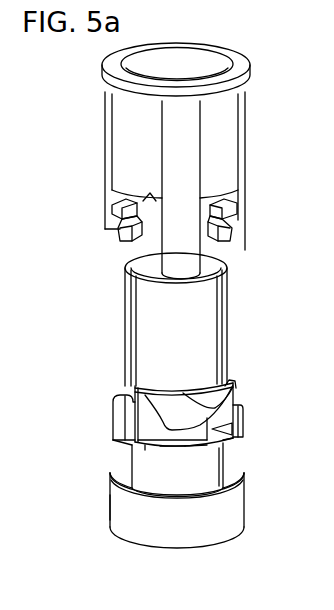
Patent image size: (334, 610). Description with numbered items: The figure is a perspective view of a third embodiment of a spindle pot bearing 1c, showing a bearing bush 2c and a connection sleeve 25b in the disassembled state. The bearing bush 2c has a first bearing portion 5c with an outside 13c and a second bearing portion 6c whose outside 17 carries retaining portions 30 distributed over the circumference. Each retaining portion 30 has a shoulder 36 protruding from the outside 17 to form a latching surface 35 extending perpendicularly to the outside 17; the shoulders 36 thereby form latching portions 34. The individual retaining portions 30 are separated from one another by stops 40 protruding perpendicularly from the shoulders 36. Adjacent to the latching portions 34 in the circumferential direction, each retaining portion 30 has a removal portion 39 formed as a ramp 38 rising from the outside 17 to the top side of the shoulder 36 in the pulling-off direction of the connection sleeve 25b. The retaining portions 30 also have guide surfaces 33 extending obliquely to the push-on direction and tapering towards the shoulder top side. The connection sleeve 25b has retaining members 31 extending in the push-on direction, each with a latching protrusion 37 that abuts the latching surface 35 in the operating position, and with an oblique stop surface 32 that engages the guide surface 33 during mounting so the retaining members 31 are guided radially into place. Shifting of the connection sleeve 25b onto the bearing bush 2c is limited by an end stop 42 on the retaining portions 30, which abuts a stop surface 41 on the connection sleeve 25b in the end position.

The spindle pot bearing 1c is at (270, 61).
The connection sleeve 25b is at (215, 128).
The stop surface 41 is at (135, 200).
The latching protrusion 37 is at (124, 229).
The retaining member 31 is at (227, 238).
The stop surface of retaining member 32 is at (223, 250).
The outside of second bearing portion 17 is at (187, 333).
The second bearing portion 6c is at (278, 372).
The guide surface 33 is at (217, 397).
The end stop 42 is at (232, 383).
The stops 40 is at (122, 416).
The ramp 38 is at (214, 429).
The removal portion 39 is at (231, 443).
The latching portion 34 is at (133, 446).
The bearing bush 2c is at (160, 471).
The retaining portions 30 is at (162, 469).
The shoulder 36 is at (172, 441).
The latching surface 35 is at (188, 446).
The first bearing portion 5c is at (272, 502).
The outside of first bearing portion 13c is at (122, 509).